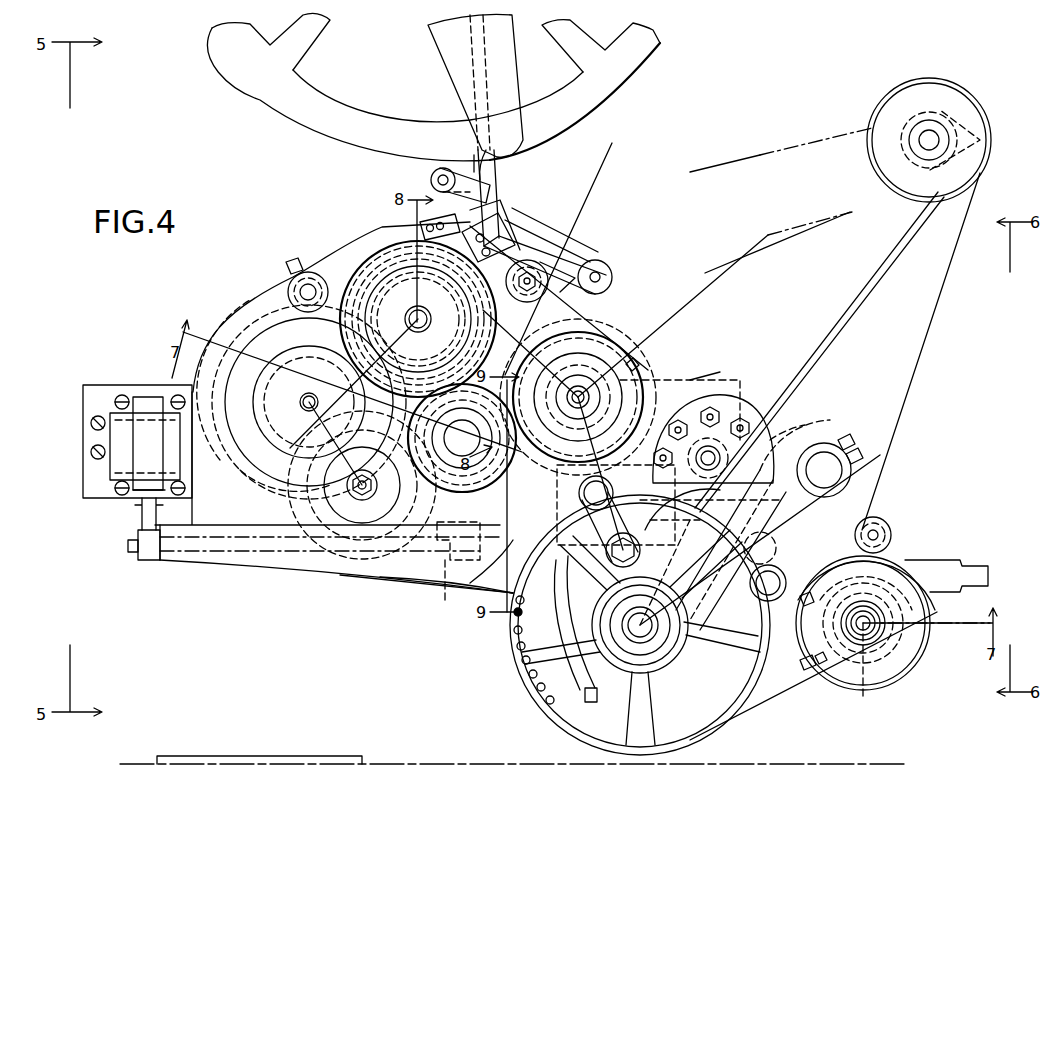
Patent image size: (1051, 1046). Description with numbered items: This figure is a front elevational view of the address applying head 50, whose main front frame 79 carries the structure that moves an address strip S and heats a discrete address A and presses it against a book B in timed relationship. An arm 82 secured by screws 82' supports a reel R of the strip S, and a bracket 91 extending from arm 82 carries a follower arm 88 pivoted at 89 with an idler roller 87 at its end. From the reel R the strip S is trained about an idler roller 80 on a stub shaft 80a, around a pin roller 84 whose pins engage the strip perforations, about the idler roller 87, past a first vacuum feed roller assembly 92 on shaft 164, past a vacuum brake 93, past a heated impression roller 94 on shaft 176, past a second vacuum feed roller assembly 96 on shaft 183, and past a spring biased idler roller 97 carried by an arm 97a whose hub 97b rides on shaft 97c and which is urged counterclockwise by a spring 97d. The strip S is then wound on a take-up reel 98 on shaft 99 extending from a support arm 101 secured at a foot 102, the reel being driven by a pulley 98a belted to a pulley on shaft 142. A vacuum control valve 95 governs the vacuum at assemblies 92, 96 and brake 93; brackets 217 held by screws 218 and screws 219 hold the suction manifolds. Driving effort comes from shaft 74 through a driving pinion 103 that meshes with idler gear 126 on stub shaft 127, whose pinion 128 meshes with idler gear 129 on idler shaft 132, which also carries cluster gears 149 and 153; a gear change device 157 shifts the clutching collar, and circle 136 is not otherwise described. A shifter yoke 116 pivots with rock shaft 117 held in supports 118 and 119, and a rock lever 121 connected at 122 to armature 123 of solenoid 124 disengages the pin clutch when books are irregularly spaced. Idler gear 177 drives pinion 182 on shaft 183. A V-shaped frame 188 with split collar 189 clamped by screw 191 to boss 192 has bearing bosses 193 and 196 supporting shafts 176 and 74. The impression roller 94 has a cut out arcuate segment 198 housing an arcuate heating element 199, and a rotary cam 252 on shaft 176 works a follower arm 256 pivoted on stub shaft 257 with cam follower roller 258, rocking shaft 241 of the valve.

The address applying head 50 is at (707, 101).
The reel R is at (270, 90).
The address strip S is at (612, 143).
The arm 82 is at (506, 198).
The bracket 91 is at (477, 165).
The pivot 89 is at (438, 181).
The idler roller 80 is at (540, 245).
The stub shaft 80a is at (578, 300).
The follower arm 88 is at (580, 242).
The screws 82' is at (585, 230).
The idler roller 87 is at (612, 275).
The pin roller 84 is at (512, 308).
The main front frame 79 is at (215, 292).
The vacuum brake 93 is at (472, 585).
The address A is at (418, 319).
The shaft 142 is at (421, 326).
The gear change device 157 is at (300, 286).
The idler shaft 132 is at (300, 404).
The gear 136 is at (320, 342).
The gear 149 is at (224, 384).
The gear 153 is at (226, 436).
The idler gear 129 is at (244, 470).
The stub shaft 127 is at (372, 505).
The pinion 128 is at (296, 516).
The driving pinion 103 is at (416, 502).
The book B is at (462, 438).
The driving shaft 74 is at (470, 418).
The shaft 164 is at (630, 360).
The first vacuum feed roller assembly 92 is at (632, 332).
The bracket 217 is at (662, 364).
The vacuum control valve 95 is at (735, 400).
The foot 102 is at (735, 390).
The follower arm 256 is at (703, 476).
The shaft 241 is at (790, 412).
The cam follower roller 258 is at (826, 406).
The split collar 189 is at (845, 441).
The clamping screw 191 is at (905, 446).
The boss 192 is at (848, 472).
The spring 97d is at (878, 517).
The spring biased idler roller 97 is at (900, 522).
The arm 97a is at (925, 532).
The hub 97b is at (900, 562).
The shaft 97c is at (890, 632).
The second vacuum feed roller assembly 96 is at (918, 680).
The shaft 183 is at (880, 642).
The screws 218 is at (856, 614).
The screws 219 is at (815, 670).
The pinion 182 is at (873, 702).
The idler gear 177 is at (815, 706).
The take-up reel 98 is at (960, 122).
The pulley 98a is at (730, 172).
The shaft 99 is at (925, 147).
The support arm 101 is at (872, 268).
The heated impression roller 94 is at (565, 728).
The shaft 176 is at (655, 640).
The bearing boss 193 is at (700, 622).
The rotary cam 252 is at (720, 722).
The arcuate heating element 199 is at (540, 700).
The cut out arcuate segment 198 is at (578, 706).
The stub shaft 257 is at (520, 630).
The bearing boss 196 is at (556, 508).
The V-shaped frame 188 is at (772, 548).
The shifter yoke 116 is at (476, 506).
The support 118 is at (440, 560).
The idler gear 126 is at (370, 572).
The rock shaft 117 is at (300, 572).
The support 119 is at (170, 562).
The rock lever 121 is at (140, 530).
The pivotal connection 122 is at (160, 510).
The armature 123 is at (140, 494).
The solenoid 124 is at (115, 455).